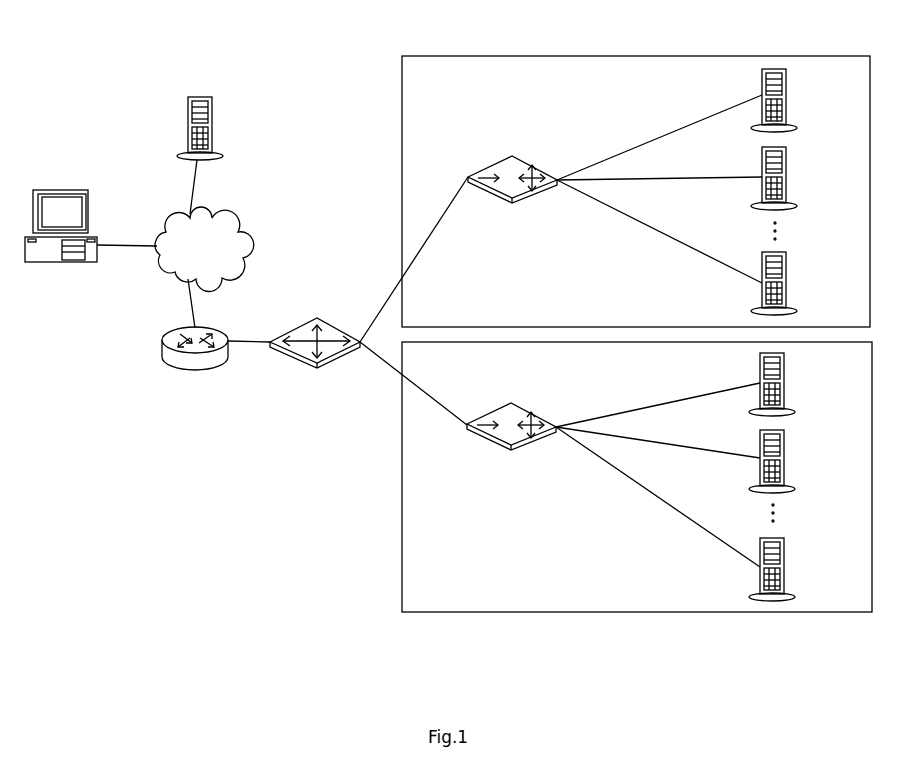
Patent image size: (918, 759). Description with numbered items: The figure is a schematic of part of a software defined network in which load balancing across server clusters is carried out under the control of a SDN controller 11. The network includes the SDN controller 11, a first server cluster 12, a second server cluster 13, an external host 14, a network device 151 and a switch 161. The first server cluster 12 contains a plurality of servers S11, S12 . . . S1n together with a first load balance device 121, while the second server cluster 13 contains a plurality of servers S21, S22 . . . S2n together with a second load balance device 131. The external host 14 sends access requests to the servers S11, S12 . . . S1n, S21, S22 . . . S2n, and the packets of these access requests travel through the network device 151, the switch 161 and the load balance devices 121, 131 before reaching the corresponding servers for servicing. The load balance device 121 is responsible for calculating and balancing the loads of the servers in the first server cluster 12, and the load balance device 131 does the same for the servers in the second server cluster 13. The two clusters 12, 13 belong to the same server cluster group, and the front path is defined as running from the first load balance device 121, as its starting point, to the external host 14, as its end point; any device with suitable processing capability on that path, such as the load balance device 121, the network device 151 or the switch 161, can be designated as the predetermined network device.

The SDN controller 11 is at (188, 116).
The external host 14 is at (58, 190).
The network device 151 is at (162, 355).
The switch 161 is at (317, 318).
The first server cluster 12 is at (402, 92).
The second server cluster 13 is at (402, 528).
The first load balance device 121 is at (470, 177).
The second load balance device 131 is at (500, 402).
The server S11 is at (786, 95).
The server S12 is at (786, 172).
The server S1n is at (786, 282).
The server S21 is at (784, 380).
The server S22 is at (784, 457).
The server S2n is at (784, 566).